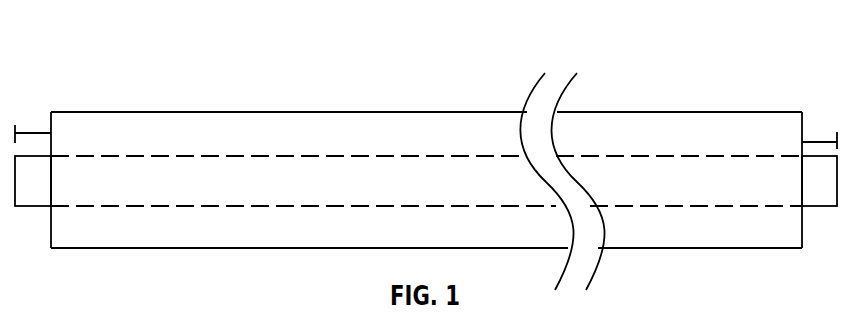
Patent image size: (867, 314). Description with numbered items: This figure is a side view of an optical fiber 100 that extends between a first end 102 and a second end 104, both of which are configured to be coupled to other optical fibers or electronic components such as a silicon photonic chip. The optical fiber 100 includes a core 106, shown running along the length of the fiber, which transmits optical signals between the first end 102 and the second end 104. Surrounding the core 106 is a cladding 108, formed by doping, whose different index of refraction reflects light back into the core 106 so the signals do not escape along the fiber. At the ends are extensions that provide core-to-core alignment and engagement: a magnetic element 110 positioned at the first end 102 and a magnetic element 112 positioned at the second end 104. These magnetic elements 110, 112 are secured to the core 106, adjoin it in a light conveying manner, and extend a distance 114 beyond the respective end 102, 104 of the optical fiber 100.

The optical fiber 100 is at (579, 50).
The first end 102 is at (31, 66).
The second end 104 is at (837, 79).
The core 106 is at (203, 165).
The cladding 108 is at (325, 128).
The magnetic element 110 is at (25, 207).
The magnetic element 112 is at (829, 207).
The distance 114 is at (25, 133).